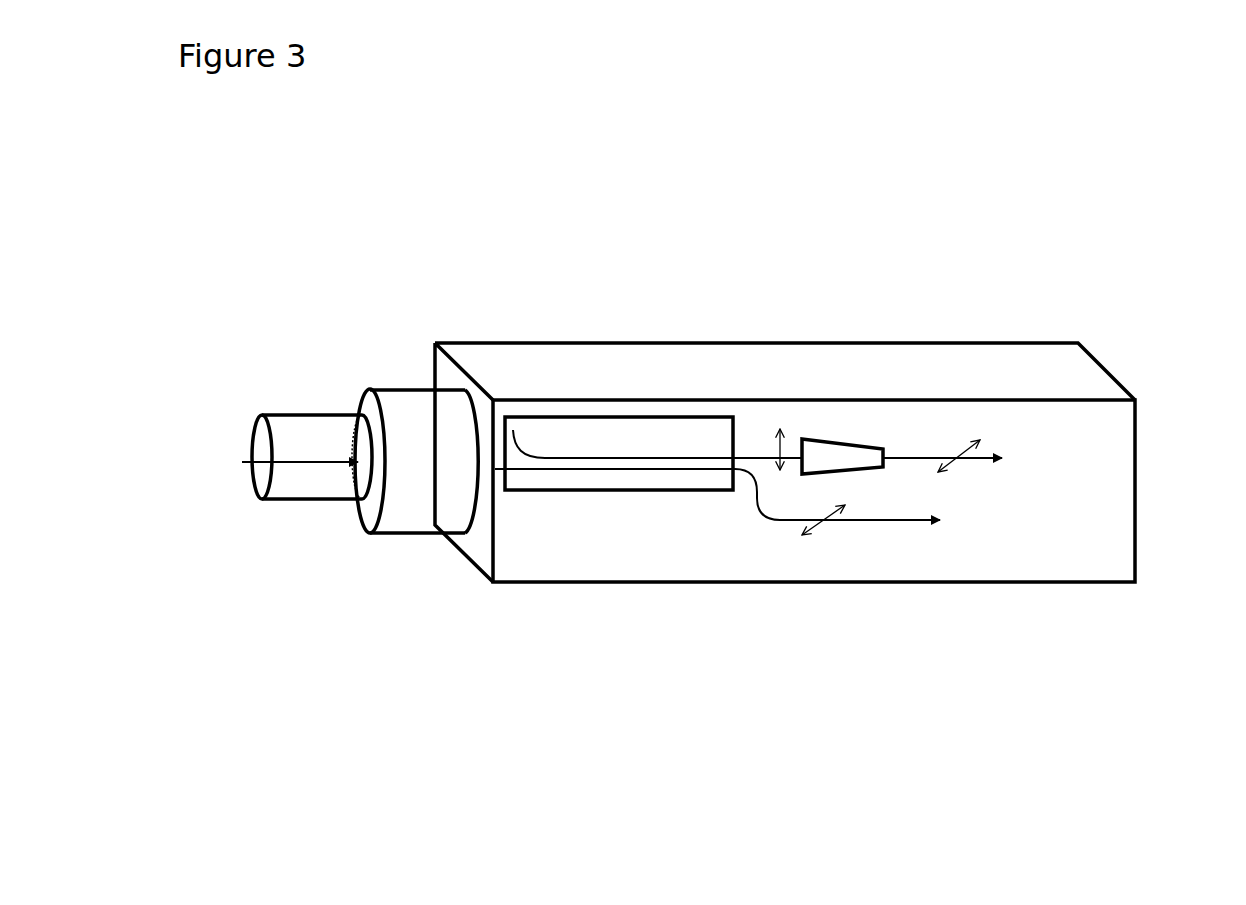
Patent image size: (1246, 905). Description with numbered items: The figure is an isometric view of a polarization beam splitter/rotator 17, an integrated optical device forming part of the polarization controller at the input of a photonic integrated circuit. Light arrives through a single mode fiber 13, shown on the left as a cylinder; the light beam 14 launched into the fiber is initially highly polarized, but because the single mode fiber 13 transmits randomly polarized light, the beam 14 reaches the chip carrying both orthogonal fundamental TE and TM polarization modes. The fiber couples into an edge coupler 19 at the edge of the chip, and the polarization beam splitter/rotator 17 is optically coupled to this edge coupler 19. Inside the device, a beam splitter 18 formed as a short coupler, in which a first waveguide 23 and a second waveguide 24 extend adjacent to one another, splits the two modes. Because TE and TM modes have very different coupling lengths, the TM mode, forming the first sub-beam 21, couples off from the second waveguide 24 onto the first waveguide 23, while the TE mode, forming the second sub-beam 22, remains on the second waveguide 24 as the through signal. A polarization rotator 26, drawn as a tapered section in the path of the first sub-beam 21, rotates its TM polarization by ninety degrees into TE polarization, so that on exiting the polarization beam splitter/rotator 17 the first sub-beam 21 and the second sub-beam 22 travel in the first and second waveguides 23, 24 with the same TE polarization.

The single mode fiber 13 is at (297, 428).
The light beam 14 is at (308, 462).
The polarization beam splitter/rotator 17 is at (1062, 370).
The beam splitter 18 is at (640, 425).
The edge coupler 19 is at (413, 412).
The first sub-beam 21 is at (785, 410).
The second sub-beam 22 is at (798, 542).
The first waveguide 23 is at (898, 455).
The second waveguide 24 is at (887, 522).
The polarization rotator 26 is at (837, 439).